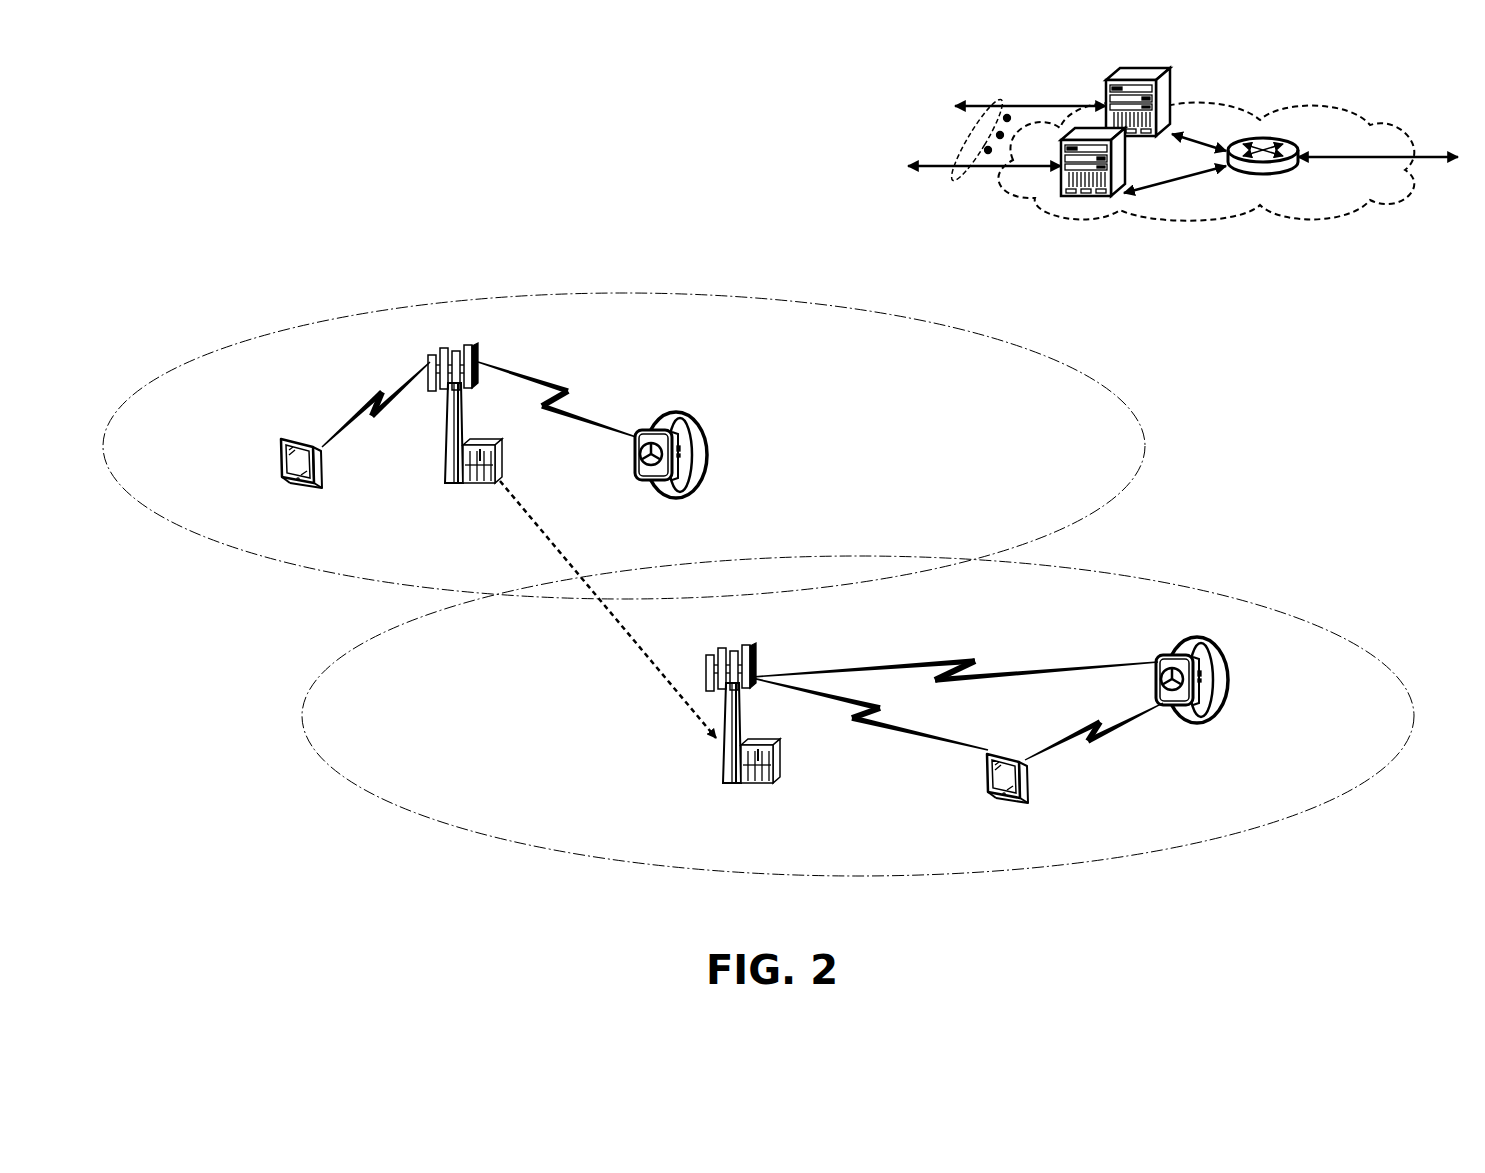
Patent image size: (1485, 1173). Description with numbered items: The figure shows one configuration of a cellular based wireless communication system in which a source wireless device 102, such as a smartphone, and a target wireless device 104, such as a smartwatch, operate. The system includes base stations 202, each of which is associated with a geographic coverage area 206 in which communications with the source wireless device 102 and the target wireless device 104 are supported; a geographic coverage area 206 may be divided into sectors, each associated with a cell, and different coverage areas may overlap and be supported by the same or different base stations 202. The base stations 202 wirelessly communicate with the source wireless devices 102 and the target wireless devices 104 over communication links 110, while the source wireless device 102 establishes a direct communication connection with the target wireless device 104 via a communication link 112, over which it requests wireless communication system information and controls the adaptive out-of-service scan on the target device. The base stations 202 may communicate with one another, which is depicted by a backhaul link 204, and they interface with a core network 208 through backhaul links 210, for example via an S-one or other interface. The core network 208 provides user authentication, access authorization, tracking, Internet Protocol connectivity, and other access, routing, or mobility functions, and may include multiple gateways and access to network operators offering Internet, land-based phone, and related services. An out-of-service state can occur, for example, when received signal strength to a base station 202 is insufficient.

The source wireless device 102 is at (282, 480).
The target wireless device 104 is at (708, 444).
The communication links 110 is at (378, 400).
The communication link 112 is at (1100, 738).
The base stations 202 is at (455, 486).
The backhaul link 204 is at (614, 632).
The geographic coverage area 206 is at (168, 547).
The core network 208 is at (1232, 213).
The backhaul links 210 is at (950, 185).